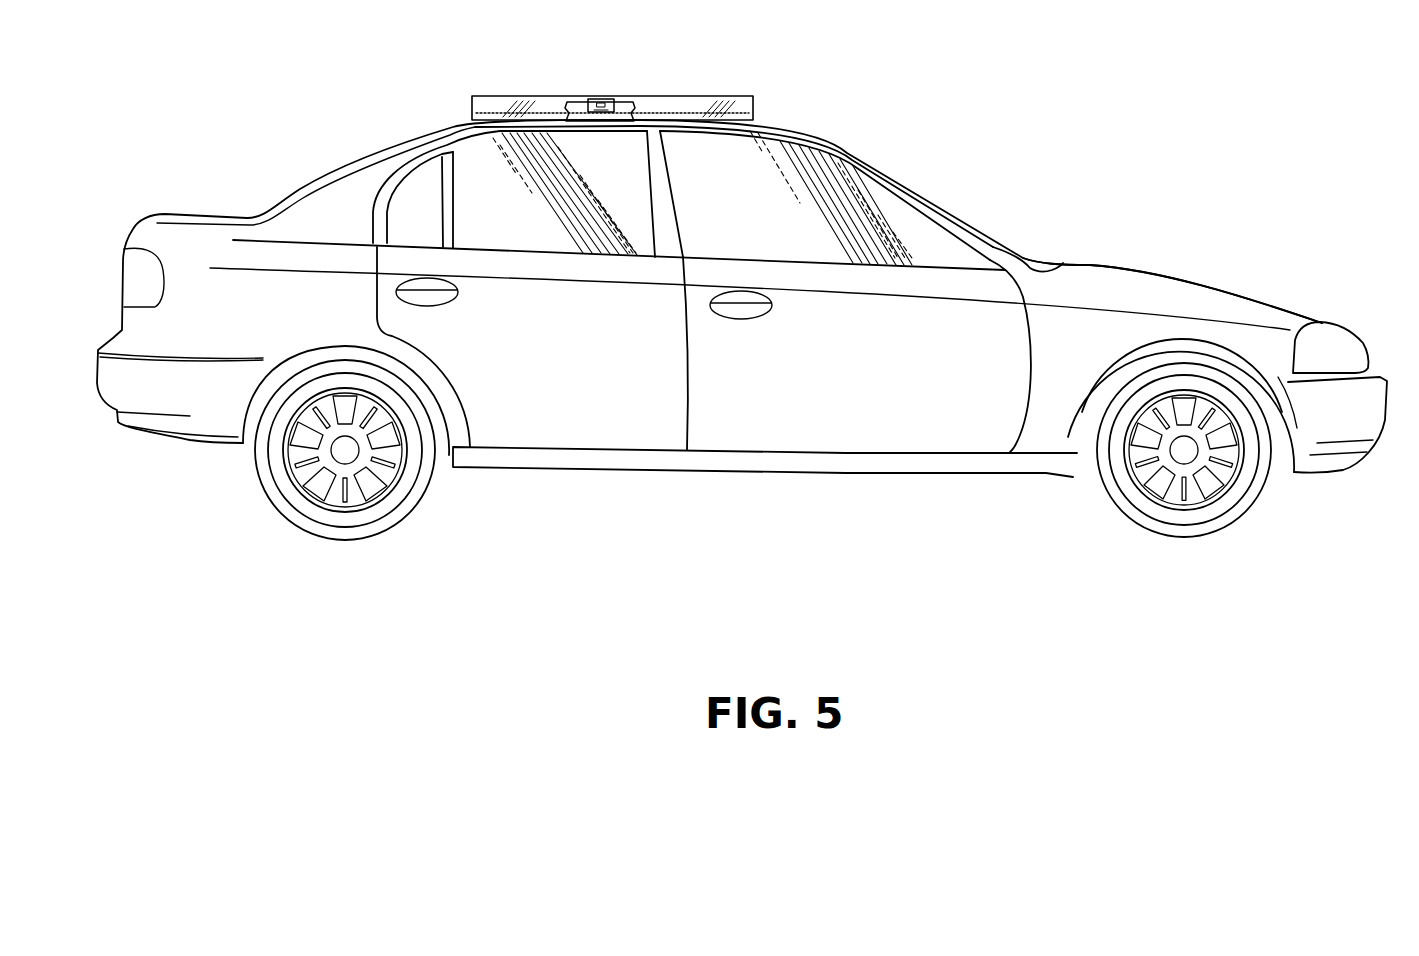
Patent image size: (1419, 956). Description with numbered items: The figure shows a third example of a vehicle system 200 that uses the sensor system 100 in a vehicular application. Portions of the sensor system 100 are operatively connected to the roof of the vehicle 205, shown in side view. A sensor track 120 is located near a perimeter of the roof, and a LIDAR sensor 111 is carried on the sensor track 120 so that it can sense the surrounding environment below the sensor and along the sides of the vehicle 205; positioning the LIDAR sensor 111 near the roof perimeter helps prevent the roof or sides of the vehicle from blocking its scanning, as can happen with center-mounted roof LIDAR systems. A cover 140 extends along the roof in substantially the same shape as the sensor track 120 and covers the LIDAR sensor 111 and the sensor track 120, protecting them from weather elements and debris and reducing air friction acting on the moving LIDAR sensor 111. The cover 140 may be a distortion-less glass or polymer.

The sensor system 100 is at (706, 69).
The LIDAR sensor 111 is at (593, 97).
The sensor track 120 is at (618, 100).
The cover 140 is at (728, 108).
The vehicle system 200 is at (742, 319).
The vehicle 205 is at (1083, 288).